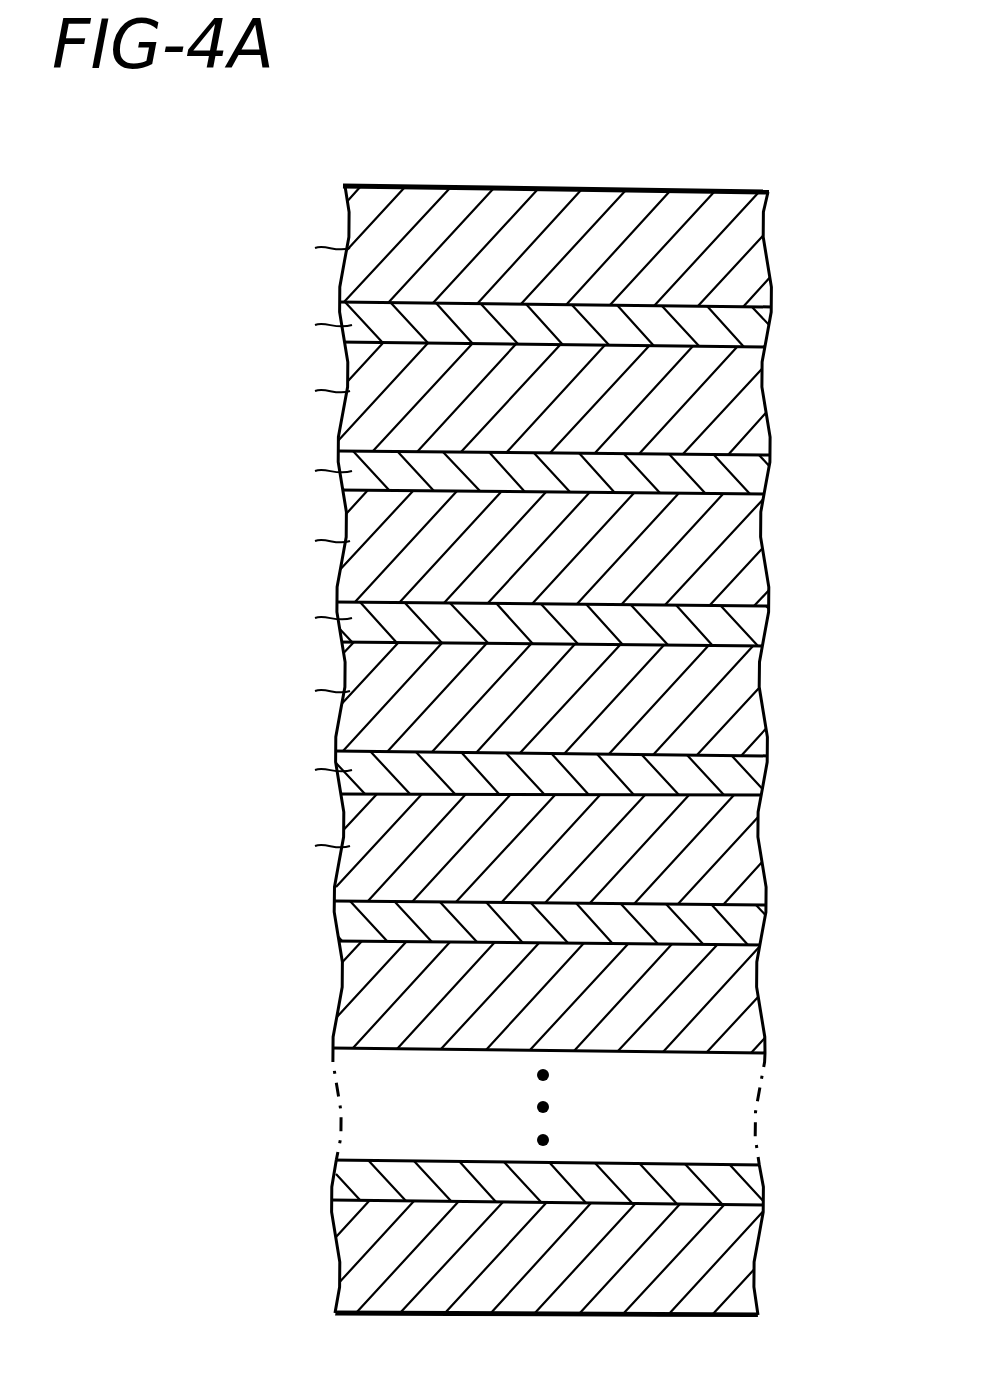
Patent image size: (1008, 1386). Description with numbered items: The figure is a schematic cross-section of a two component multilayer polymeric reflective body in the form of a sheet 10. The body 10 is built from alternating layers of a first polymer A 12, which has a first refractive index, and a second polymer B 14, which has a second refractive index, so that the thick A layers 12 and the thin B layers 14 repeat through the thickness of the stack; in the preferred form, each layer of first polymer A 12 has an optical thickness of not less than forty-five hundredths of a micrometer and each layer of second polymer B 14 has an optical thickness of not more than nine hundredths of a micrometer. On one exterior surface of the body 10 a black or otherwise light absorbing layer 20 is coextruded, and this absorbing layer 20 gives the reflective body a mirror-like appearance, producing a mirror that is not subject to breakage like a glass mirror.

The sheet 10 is at (852, 173).
The first polymer (A) layer 12 is at (749, 249).
The second polymer (B) layer 14 is at (749, 332).
The light absorbing layer 20 is at (557, 188).